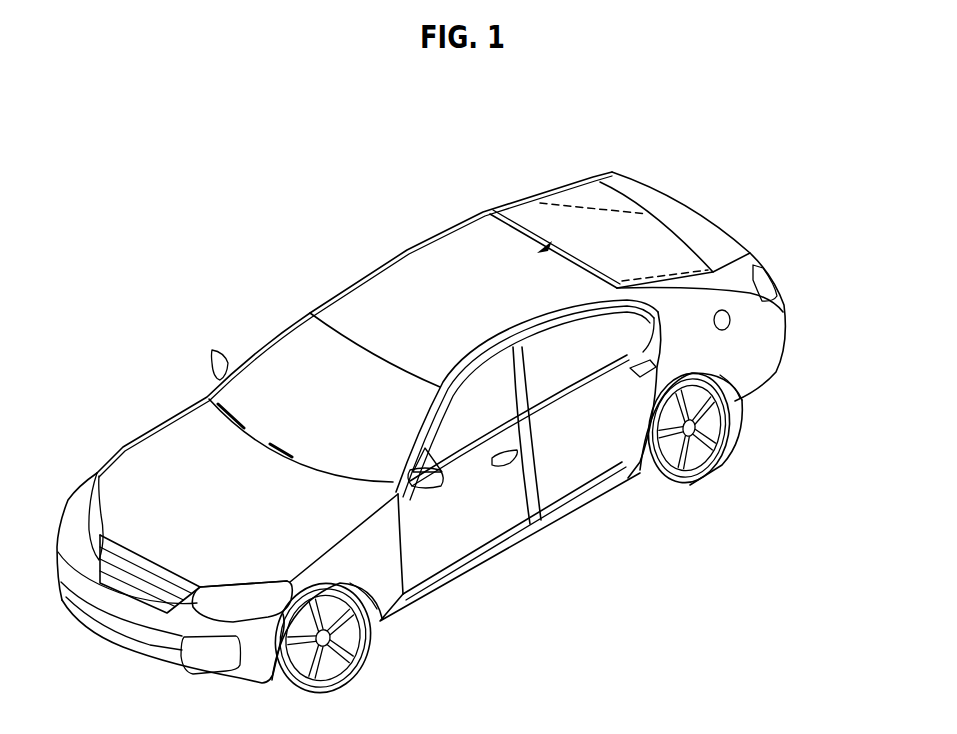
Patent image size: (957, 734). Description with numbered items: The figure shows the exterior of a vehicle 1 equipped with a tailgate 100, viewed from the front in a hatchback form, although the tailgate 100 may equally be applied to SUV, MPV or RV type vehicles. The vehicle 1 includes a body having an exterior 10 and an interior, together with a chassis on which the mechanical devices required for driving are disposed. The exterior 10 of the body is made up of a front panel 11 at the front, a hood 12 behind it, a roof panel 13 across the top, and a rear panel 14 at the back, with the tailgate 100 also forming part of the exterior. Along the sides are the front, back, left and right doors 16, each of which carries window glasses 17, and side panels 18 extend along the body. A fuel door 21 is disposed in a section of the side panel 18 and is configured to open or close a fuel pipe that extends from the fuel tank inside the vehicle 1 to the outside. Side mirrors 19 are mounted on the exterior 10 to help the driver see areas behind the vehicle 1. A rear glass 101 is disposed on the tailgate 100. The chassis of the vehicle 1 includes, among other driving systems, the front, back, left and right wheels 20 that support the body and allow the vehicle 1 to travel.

The vehicle 1 is at (377, 131).
The exterior 10 is at (335, 280).
The front panel 11 is at (197, 628).
The hood 12 is at (137, 464).
The roof panel 13 is at (407, 273).
The rear panel 14 is at (787, 313).
The doors 16 is at (460, 541).
The window glasses 17 is at (475, 427).
The side panel 18 is at (715, 345).
The side mirrors 19 is at (214, 349).
The wheels 20 is at (343, 653).
The fuel door 21 is at (730, 323).
The tailgate 100 is at (733, 214).
The rear glass 101 is at (591, 207).